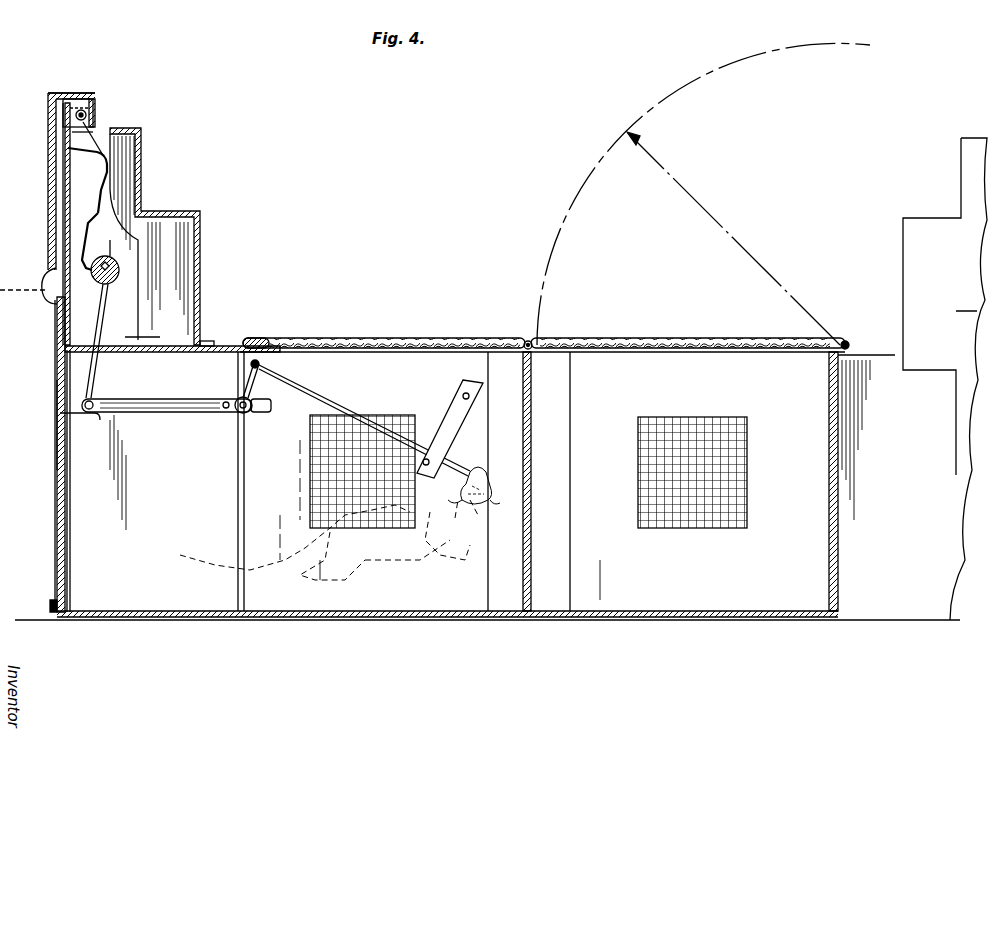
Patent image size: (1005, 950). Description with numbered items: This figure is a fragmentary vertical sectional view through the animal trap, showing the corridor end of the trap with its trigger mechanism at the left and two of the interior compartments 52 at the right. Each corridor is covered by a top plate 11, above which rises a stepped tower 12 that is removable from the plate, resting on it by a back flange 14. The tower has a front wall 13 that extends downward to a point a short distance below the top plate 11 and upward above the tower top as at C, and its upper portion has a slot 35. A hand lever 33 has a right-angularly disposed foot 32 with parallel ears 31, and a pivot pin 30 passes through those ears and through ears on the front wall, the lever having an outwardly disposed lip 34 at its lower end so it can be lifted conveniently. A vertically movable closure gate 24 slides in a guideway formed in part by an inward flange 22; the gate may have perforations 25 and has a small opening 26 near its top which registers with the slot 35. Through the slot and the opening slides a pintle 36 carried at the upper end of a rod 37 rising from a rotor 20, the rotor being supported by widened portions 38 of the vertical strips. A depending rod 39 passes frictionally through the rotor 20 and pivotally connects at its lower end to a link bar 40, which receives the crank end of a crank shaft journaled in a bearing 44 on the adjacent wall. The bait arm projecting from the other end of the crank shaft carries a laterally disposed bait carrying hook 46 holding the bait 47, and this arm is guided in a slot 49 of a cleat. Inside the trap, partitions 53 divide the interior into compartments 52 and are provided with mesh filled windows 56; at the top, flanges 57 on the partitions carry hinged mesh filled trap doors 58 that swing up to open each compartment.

The top plate 11 is at (170, 356).
The tower 12 is at (200, 262).
The front wall 13 is at (90, 425).
The back flange 14 is at (210, 340).
The rotor 20 is at (105, 300).
The inward flange 22 is at (57, 430).
The closure gate 24 is at (57, 385).
The perforations 25 is at (55, 474).
The small opening 26 is at (57, 340).
The pivot pin 30 is at (88, 115).
The parallel ears 31 is at (90, 97).
The foot 32 is at (62, 94).
The hand lever 33 is at (48, 236).
The lip 34 is at (44, 302).
The slot 35 is at (65, 166).
The pintle 36 is at (100, 152).
The rod 37 is at (103, 196).
The widened portions 38 is at (10, 270).
The depending rod 39 is at (96, 392).
The link bar 40 is at (196, 414).
The bearing 44 is at (262, 340).
The bait carrying hook 46 is at (498, 462).
The bait 47 is at (490, 504).
The slot 49 is at (442, 452).
The compartments 52 is at (654, 481).
The partitions 53 is at (532, 404).
The mesh filled windows 56 is at (393, 418).
The flanges 57 is at (525, 358).
The mesh filled trap doors 58 is at (404, 346).
The upward extension C is at (68, 128).